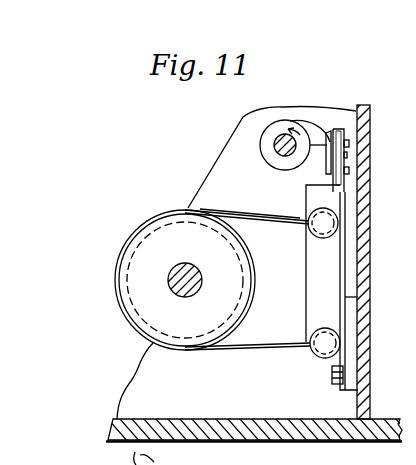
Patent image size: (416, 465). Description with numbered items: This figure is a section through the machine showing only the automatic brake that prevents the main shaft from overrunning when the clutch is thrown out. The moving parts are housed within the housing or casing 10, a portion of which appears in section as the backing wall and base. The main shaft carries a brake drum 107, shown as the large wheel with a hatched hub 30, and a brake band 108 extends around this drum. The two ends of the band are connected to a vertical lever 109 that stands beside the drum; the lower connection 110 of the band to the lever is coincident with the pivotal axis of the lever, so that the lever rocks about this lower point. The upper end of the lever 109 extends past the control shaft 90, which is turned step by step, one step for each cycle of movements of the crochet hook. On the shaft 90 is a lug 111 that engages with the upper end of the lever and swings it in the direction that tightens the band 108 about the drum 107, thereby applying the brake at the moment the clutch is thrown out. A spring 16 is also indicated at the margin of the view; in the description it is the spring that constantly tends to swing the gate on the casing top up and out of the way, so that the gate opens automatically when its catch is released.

The housing or casing 10 is at (379, 209).
The spring 16 is at (410, 304).
The drive wheel 30 is at (186, 266).
The control shaft 90 is at (275, 141).
The brake drum 107 is at (247, 252).
The brake band 108 is at (255, 195).
The vertical lever 109 is at (313, 262).
The lower connection 110 is at (312, 348).
The lug 111 is at (310, 131).